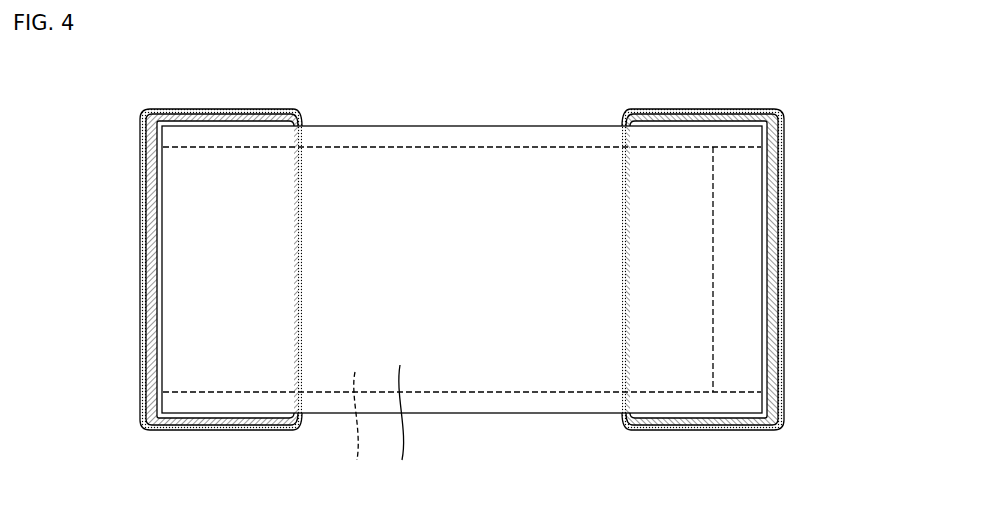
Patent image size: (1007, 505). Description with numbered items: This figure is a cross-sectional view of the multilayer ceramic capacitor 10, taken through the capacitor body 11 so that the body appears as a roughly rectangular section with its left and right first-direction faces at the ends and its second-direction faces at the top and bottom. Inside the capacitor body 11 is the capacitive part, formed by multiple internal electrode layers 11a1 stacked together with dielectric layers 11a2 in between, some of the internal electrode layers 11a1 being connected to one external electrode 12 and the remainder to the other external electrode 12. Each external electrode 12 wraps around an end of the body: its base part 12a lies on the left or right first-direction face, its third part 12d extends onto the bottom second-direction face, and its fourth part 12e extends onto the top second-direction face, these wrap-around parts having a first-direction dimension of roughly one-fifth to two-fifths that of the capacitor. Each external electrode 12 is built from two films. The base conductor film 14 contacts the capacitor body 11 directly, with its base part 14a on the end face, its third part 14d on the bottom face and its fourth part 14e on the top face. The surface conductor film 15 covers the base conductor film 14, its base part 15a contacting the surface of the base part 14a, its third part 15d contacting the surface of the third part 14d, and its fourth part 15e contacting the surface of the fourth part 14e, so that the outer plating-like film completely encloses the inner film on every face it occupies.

The multilayer ceramic capacitor 10 is at (139, 115).
The capacitor body 11 is at (353, 126).
The internal electrode layers 11a1 is at (346, 426).
The dielectric layers 11a2 is at (399, 423).
The external electrode 12 is at (458, 270).
The base part 12a is at (158, 233).
The fourth part 12e is at (180, 110).
The third part 12d is at (181, 431).
The base conductor film 14 is at (458, 270).
The base part 14a is at (152, 267).
The fourth part 14e is at (222, 119).
The third part 14d is at (221, 421).
The surface conductor film 15 is at (458, 270).
The base part 15a is at (141, 297).
The fourth part 15e is at (261, 109).
The third part 15d is at (263, 431).